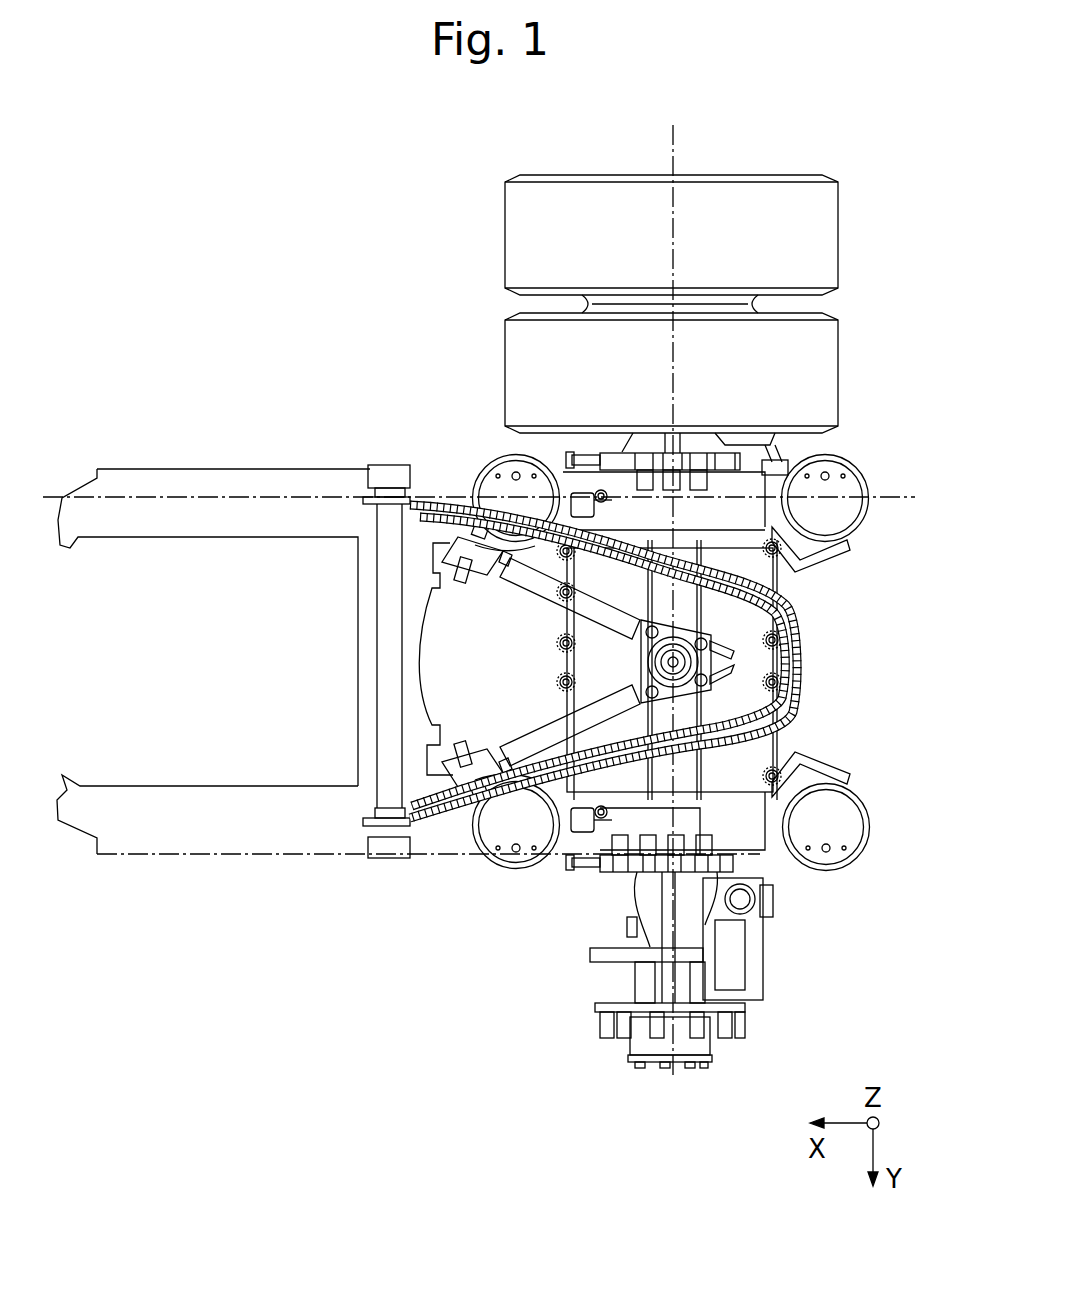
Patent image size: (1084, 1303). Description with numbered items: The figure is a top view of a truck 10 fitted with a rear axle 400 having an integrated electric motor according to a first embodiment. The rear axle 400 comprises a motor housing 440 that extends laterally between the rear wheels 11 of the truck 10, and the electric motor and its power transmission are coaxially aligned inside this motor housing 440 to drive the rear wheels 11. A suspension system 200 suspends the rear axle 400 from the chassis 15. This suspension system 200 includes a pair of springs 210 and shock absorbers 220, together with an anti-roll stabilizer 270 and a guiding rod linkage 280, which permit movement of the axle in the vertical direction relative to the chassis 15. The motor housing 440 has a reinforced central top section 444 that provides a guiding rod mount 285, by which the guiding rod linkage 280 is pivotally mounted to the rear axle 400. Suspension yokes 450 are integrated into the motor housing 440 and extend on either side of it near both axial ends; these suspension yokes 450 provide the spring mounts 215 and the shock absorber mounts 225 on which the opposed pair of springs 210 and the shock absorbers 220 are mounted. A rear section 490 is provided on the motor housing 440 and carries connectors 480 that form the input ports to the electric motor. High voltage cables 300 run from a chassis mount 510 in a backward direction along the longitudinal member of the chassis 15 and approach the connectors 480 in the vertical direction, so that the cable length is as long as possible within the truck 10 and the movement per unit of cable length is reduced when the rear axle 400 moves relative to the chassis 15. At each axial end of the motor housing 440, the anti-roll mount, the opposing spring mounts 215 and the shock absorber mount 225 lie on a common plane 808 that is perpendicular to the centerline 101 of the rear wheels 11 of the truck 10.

The truck 10 is at (182, 212).
The rear wheels 11 is at (838, 348).
The chassis 15 is at (222, 856).
The centerline 101 is at (678, 158).
The suspension system 200 is at (360, 446).
The springs 210 is at (845, 828).
The spring mounts 215 is at (497, 487).
The shock absorbers 220 is at (580, 832).
The shock absorber mounts 225 is at (583, 493).
The anti-roll stabilizer 270 is at (383, 597).
The guiding rod linkage 280 is at (542, 738).
The guiding rod mount 285 is at (670, 662).
The high voltage cables 300 is at (805, 728).
The rear axle 400 is at (249, 1060).
The motor housing 440 is at (768, 573).
The reinforced central top section 444 is at (722, 637).
The suspension yokes 450 is at (740, 830).
The connectors 480 is at (795, 627).
The rear section 490 is at (806, 671).
The chassis mount 510 is at (368, 830).
The common plane 808 is at (138, 497).